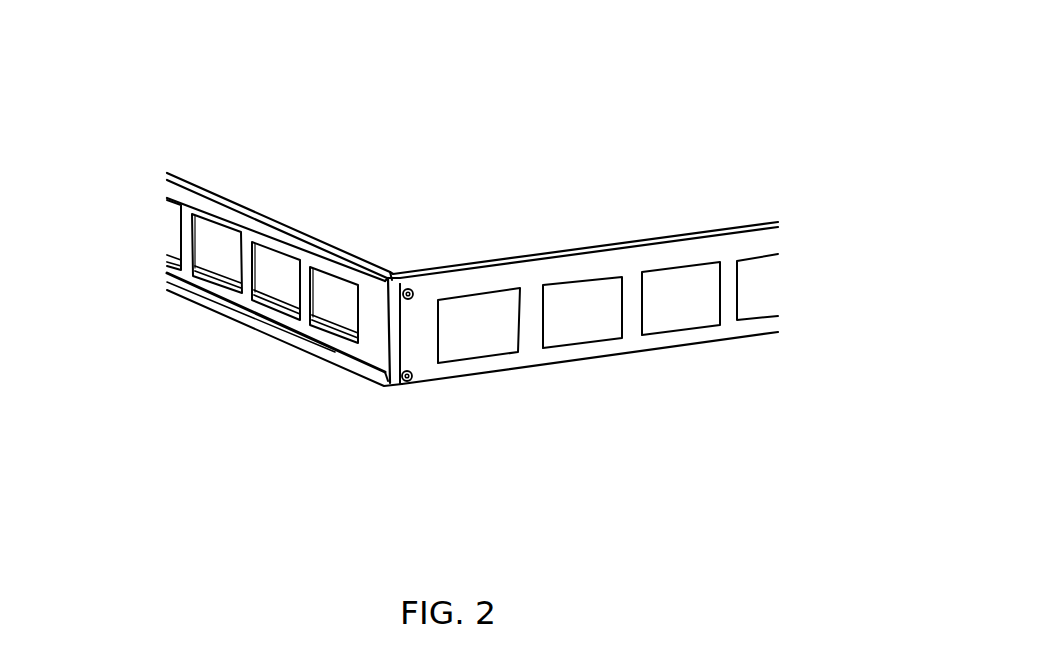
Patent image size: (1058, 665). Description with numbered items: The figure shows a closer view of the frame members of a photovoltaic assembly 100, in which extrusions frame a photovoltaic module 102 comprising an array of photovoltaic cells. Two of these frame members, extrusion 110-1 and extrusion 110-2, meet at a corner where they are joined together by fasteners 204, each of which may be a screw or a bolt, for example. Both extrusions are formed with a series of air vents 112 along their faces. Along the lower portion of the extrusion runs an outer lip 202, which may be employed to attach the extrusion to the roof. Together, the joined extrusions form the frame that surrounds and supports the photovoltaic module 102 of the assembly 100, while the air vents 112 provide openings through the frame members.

The photovoltaic assembly 100 is at (207, 82).
The photovoltaic module 102 is at (590, 193).
The extrusion 110-1 is at (377, 347).
The extrusion 110-2 is at (458, 368).
The air vents 112 is at (268, 256).
The outer lip 202 is at (285, 331).
The fasteners 204 is at (408, 288).